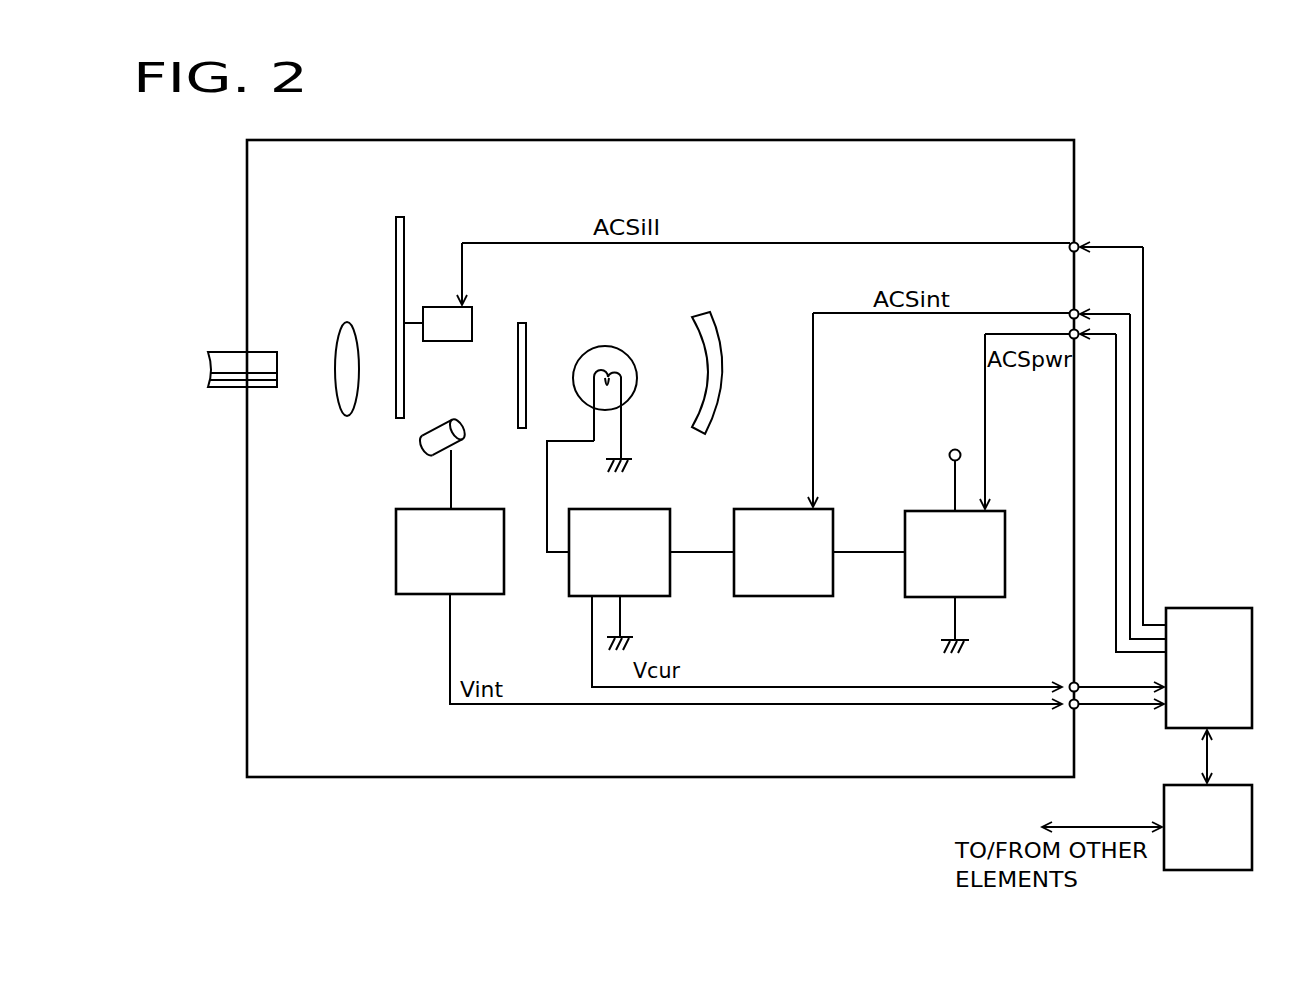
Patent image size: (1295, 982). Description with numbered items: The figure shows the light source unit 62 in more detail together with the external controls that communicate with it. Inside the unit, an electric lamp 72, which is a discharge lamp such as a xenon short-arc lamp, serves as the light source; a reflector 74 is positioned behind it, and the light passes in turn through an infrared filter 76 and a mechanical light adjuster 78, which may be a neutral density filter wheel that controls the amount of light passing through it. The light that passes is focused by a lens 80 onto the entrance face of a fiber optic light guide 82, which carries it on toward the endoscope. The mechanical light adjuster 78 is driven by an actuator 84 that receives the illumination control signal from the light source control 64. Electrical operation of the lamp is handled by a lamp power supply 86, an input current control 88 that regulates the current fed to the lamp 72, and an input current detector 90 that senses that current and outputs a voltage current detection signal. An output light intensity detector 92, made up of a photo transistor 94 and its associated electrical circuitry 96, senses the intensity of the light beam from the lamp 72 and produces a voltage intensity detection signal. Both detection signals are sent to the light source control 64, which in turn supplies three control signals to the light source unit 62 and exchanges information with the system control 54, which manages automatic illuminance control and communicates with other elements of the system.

The system control 54 is at (1233, 785).
The light source unit 62 is at (967, 207).
The light source control 64 is at (1203, 608).
The electric lamp 72 is at (627, 356).
The reflector 74 is at (714, 336).
The infrared filter 76 is at (526, 342).
The mechanical light adjuster 78 is at (405, 243).
The lens 80 is at (352, 326).
The fiber optic light guide 82 is at (262, 352).
The actuator 84 is at (472, 316).
The lamp power supply 86 is at (982, 597).
The input current control 88 is at (798, 596).
The input current detector 90 is at (647, 596).
The output light intensity detector 92 is at (383, 490).
The photo transistor 94 is at (455, 446).
The electrical circuitry 96 is at (484, 594).